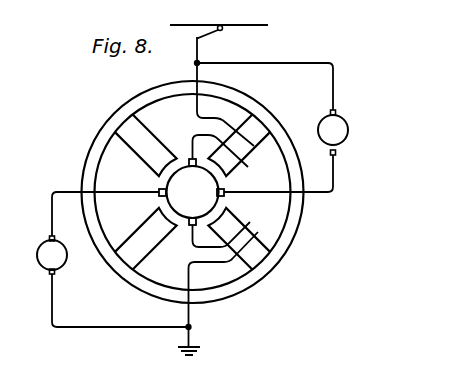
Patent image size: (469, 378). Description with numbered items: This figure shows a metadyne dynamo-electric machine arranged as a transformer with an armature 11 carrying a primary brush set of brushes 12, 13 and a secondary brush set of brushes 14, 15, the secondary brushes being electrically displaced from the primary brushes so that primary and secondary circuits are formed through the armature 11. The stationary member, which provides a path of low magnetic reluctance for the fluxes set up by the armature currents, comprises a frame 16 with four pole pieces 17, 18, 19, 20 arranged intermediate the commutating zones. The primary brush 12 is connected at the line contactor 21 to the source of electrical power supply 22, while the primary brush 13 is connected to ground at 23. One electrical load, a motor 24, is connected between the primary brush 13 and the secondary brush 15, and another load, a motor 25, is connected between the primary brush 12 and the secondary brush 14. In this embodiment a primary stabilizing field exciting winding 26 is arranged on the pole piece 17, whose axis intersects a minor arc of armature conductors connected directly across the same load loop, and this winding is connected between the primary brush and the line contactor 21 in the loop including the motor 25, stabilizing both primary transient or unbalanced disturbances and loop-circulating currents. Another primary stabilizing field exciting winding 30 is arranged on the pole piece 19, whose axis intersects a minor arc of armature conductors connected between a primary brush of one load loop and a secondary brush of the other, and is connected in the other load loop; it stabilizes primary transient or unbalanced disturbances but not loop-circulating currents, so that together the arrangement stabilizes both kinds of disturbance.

The armature 11 is at (165, 183).
The primary brush 12 is at (189, 158).
The primary brush 13 is at (187, 227).
The secondary brush 14 is at (225, 193).
The secondary brush 15 is at (158, 195).
The frame 16 is at (297, 225).
The pole piece 17 is at (246, 128).
The pole piece 18 is at (143, 248).
The pole piece 19 is at (248, 222).
The pole piece 20 is at (172, 140).
The line contactor 21 is at (206, 39).
The source of electrical power supply 22 is at (253, 28).
The ground 23 is at (191, 330).
The motor 24 is at (39, 263).
The motor 25 is at (345, 124).
The primary stabilizing field exciting winding 26 is at (247, 160).
The primary stabilizing field exciting winding 30 is at (251, 231).